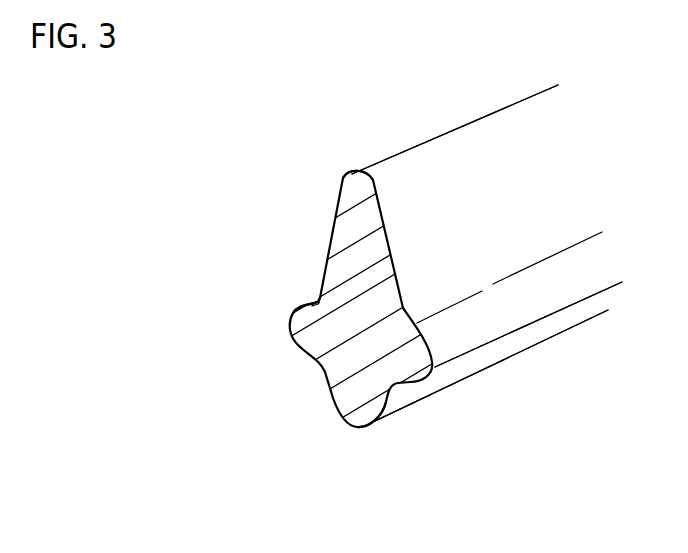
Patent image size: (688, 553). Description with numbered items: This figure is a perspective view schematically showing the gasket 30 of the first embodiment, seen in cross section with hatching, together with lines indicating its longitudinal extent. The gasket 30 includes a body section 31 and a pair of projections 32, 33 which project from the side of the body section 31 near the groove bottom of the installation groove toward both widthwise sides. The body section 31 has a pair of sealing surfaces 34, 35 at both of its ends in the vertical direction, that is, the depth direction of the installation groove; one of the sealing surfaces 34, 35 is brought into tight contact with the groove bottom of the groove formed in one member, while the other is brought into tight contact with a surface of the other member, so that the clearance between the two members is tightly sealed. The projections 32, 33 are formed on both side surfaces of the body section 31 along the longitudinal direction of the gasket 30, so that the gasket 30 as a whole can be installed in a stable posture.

The gasket 30 is at (260, 433).
The body section 31 is at (357, 265).
The projection 32 is at (315, 303).
The projection 33 is at (512, 320).
The sealing surface 34 is at (387, 168).
The sealing surface 35 is at (409, 410).